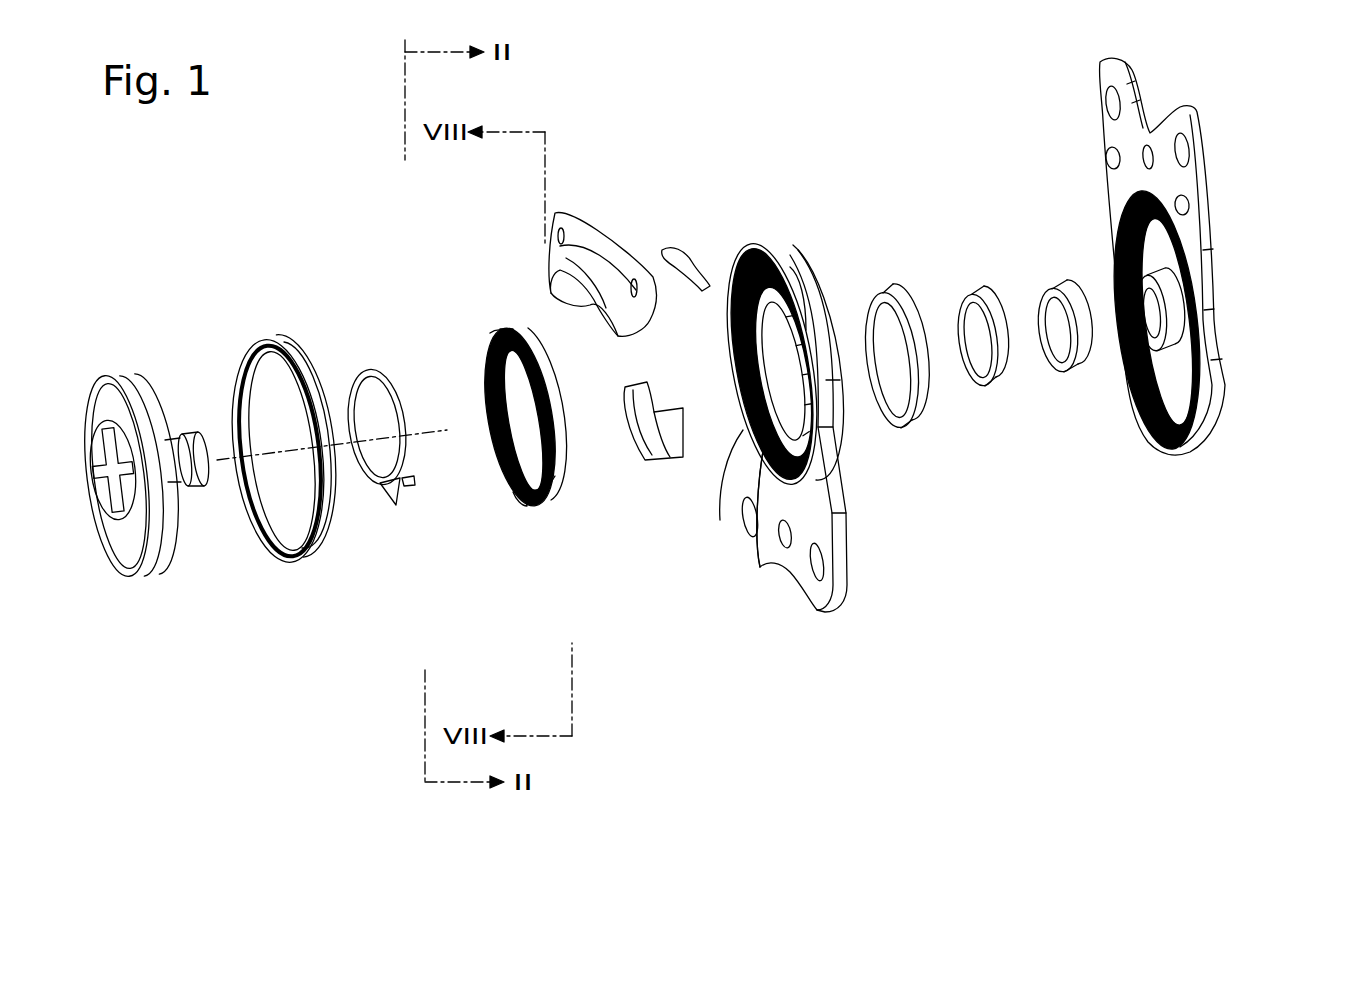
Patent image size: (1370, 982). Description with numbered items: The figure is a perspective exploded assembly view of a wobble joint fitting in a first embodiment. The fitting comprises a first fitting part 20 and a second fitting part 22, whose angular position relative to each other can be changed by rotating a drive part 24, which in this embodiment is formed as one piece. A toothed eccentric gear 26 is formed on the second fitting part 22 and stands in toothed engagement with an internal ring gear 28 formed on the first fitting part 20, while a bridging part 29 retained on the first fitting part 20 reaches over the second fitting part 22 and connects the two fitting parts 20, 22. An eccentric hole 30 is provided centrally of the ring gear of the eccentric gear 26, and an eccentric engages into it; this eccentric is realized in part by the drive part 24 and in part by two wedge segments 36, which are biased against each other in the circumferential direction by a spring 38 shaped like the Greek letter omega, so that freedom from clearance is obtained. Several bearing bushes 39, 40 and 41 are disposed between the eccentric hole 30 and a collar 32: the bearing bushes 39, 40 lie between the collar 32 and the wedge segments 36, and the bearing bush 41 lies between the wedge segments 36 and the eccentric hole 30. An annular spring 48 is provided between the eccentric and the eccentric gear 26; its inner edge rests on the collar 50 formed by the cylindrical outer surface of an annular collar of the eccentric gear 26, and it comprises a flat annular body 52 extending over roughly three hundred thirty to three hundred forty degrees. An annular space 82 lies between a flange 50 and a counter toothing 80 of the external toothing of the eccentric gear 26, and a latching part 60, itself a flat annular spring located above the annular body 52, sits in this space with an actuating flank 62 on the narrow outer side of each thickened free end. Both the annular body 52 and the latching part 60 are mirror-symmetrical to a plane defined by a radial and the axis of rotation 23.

The first fitting part 20 is at (1213, 380).
The second fitting part 22 is at (835, 553).
The axis of rotation 23 is at (337, 447).
The drive part 24 is at (113, 543).
The eccentric gear 26 is at (828, 293).
The internal ring gear 28 is at (1128, 380).
The bridging part 29 is at (595, 230).
The eccentric hole 30 is at (720, 520).
The collar 32 is at (1112, 250).
The wedge segments 36 is at (680, 460).
The spring 38 is at (372, 372).
The bearing bush 39 is at (1071, 386).
The bearing bush 40 is at (994, 392).
The bearing bush 41 is at (919, 421).
The annular spring 48 is at (557, 428).
The collar 50 is at (790, 267).
The annular body 52 is at (557, 470).
The latching part 60 is at (503, 468).
The actuating flank 62 is at (490, 333).
The counter toothing 80 is at (732, 277).
The annular space 82 is at (760, 567).